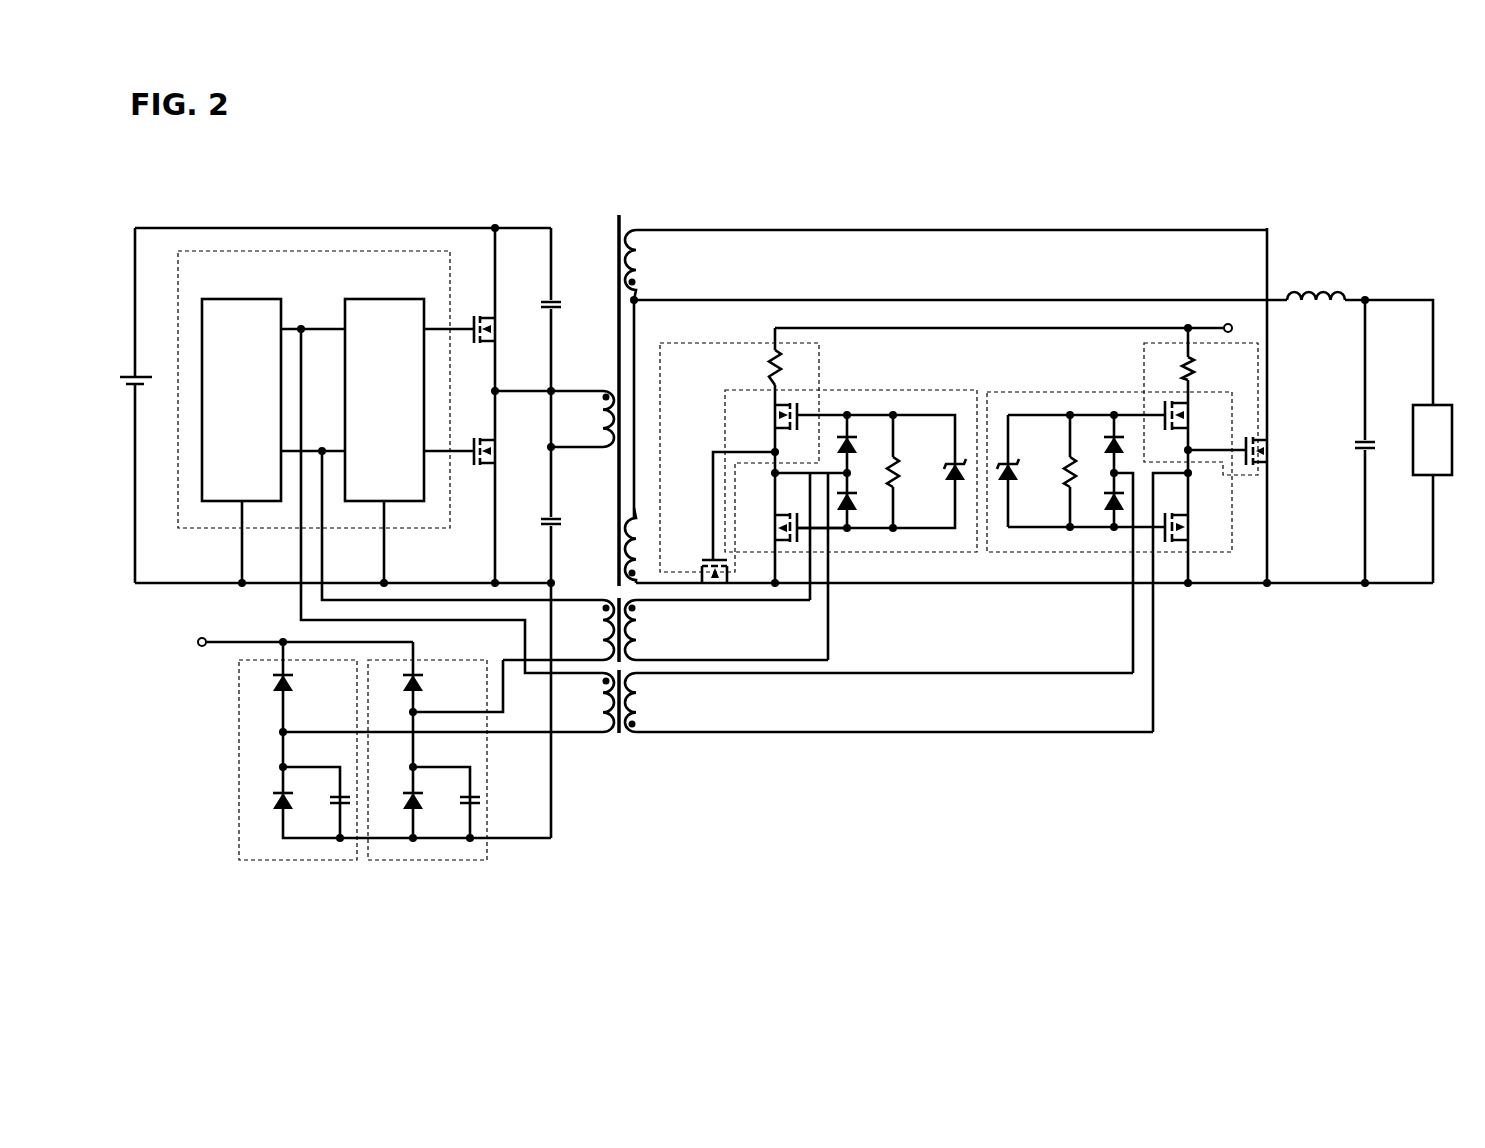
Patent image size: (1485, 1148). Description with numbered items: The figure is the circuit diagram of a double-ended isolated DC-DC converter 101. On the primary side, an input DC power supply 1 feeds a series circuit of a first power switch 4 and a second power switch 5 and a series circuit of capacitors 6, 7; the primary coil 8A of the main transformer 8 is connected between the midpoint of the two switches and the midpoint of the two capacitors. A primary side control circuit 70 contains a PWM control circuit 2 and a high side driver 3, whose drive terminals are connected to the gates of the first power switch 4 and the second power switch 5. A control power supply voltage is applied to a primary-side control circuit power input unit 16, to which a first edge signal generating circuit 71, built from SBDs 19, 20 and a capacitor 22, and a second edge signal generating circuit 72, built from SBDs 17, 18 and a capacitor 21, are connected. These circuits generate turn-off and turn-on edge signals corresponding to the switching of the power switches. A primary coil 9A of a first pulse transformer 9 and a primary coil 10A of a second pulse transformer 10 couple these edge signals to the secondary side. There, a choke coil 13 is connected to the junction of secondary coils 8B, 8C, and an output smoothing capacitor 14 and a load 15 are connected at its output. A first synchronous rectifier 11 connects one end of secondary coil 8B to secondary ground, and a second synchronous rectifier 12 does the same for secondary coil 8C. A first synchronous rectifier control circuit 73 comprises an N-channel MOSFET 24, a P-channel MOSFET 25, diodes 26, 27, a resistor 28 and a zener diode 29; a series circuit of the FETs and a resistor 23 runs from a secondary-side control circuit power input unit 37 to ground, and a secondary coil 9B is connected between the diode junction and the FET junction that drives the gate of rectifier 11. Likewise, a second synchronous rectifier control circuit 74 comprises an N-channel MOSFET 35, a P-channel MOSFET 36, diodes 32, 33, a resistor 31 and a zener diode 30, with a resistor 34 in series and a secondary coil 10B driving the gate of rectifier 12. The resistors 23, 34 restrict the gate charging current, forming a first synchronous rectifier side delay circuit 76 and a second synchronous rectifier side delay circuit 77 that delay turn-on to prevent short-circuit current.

The input DC power supply 1 is at (124, 383).
The PWM control circuit 2 is at (242, 299).
The high side driver 3 is at (387, 299).
The first power switch 4 is at (480, 435).
The second power switch 5 is at (480, 314).
The capacitor 6 is at (541, 302).
The capacitor 7 is at (541, 519).
The main transformer 8 is at (619, 382).
The primary coil 8A is at (588, 419).
The secondary coil 8B is at (630, 528).
The secondary coil 8C is at (650, 265).
The first pulse transformer 9 is at (619, 601).
The primary coil of first pulse transformer 9A is at (589, 630).
The secondary coil of first pulse transformer 9B is at (649, 630).
The second pulse transformer 10 is at (620, 732).
The primary coil of second pulse transformer 10A is at (586, 702).
The secondary coil of second pulse transformer 10B is at (654, 702).
The first synchronous rectifier 11 is at (697, 563).
The second synchronous rectifier 12 is at (1272, 451).
The choke coil 13 is at (1316, 278).
The output smoothing capacitor 14 is at (1348, 446).
The load 15 is at (1446, 405).
The primary-side control circuit power input unit 16 is at (301, 627).
The schottky barrier diode 17 is at (267, 683).
The schottky barrier diode 18 is at (267, 800).
The schottky barrier diode 19 is at (397, 683).
The schottky barrier diode 20 is at (397, 800).
The capacitor 21 is at (326, 800).
The capacitor 22 is at (456, 800).
The resistor 23 is at (790, 367).
The N-channel MOSFET 24 is at (796, 416).
The P-channel MOSFET 25 is at (796, 527).
The diode 26 is at (861, 445).
The diode 27 is at (861, 500).
The resistor 28 is at (906, 472).
The zener diode 29 is at (952, 484).
The zener diode 30 is at (1012, 482).
The resistor 31 is at (1055, 472).
The diode 32 is at (1101, 445).
The diode 33 is at (1101, 500).
The resistor 34 is at (1204, 368).
The N-channel MOSFET 35 is at (1167, 415).
The P-channel MOSFET 36 is at (1192, 527).
The secondary-side control circuit power input unit 37 is at (1244, 328).
The primary side control circuit 70 is at (333, 251).
The first edge signal generating circuit 71 is at (444, 787).
The second edge signal generating circuit 72 is at (279, 787).
The first synchronous rectifier control circuit 73 is at (851, 447).
The second synchronous rectifier control circuit 74 is at (1109, 446).
The first synchronous rectifier side delay circuit 76 is at (753, 419).
The second synchronous rectifier side delay circuit 77 is at (1185, 365).
The double-ended isolated DC-DC converter 101 is at (1293, 178).